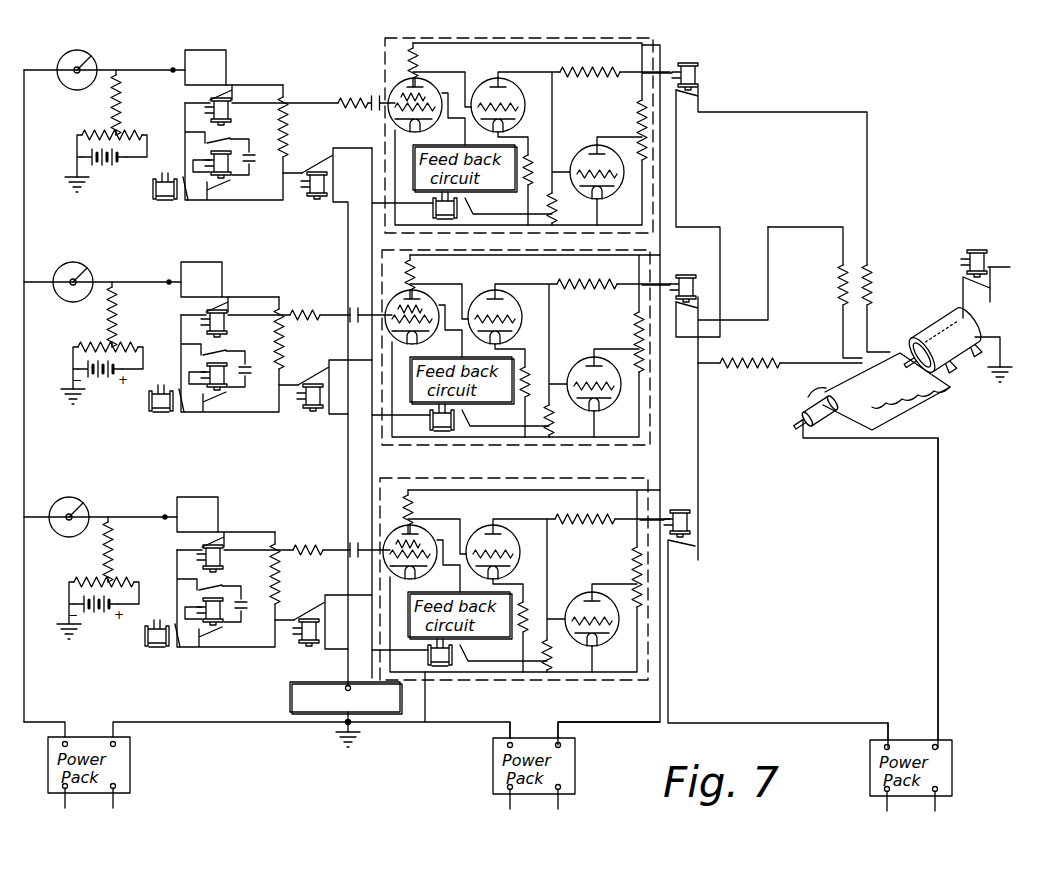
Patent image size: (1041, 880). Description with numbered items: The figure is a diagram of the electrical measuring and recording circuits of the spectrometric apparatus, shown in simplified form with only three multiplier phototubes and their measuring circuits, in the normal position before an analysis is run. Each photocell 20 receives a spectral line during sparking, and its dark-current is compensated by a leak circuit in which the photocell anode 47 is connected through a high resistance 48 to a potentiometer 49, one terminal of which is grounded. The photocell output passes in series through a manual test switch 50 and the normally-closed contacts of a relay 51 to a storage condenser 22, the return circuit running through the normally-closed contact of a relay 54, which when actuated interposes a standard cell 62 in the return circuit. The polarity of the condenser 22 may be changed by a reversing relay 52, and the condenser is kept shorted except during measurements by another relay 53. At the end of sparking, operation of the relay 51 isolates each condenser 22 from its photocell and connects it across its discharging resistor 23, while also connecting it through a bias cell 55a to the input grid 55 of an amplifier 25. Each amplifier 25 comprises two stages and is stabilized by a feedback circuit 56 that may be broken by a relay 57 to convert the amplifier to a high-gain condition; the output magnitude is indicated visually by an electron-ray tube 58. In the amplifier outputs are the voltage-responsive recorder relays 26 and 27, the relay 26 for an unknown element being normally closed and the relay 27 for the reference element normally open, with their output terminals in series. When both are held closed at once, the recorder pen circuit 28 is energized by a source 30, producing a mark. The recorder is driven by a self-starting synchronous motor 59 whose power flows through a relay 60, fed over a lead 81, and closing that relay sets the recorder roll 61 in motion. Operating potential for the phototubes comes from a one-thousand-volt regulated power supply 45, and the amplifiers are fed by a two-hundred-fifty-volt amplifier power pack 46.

The photocell 20 is at (58, 66).
The photocell anode 47 is at (92, 60).
The high resistance 48 is at (121, 100).
The potentiometer 49 is at (80, 134).
The manual test switch 50 is at (176, 68).
The relay 51 is at (230, 118).
The reversing relay 52 is at (218, 178).
The storage condenser 22 is at (252, 165).
The discharging resistor 23 is at (286, 137).
The relay 53 is at (154, 197).
The relay 54 is at (314, 197).
The input grid 55 is at (398, 100).
The bias cell 55a is at (376, 112).
The amplifier 25 is at (385, 58).
The feedback circuit 56 is at (487, 187).
The relay 57 is at (432, 207).
The electron-ray tube 58 is at (592, 146).
The recorder relay 26 is at (690, 67).
The recorder relay 27 is at (688, 511).
The recorder pen circuit 28 is at (780, 112).
The synchronous motor 59 is at (932, 330).
The relay 60 is at (966, 252).
The lead 81 is at (1003, 265).
The recorder roll 61 is at (848, 412).
The standard cell 62 is at (290, 697).
The power supply 45 is at (128, 764).
The amplifier power pack 46 is at (576, 770).
The source 30 is at (870, 771).